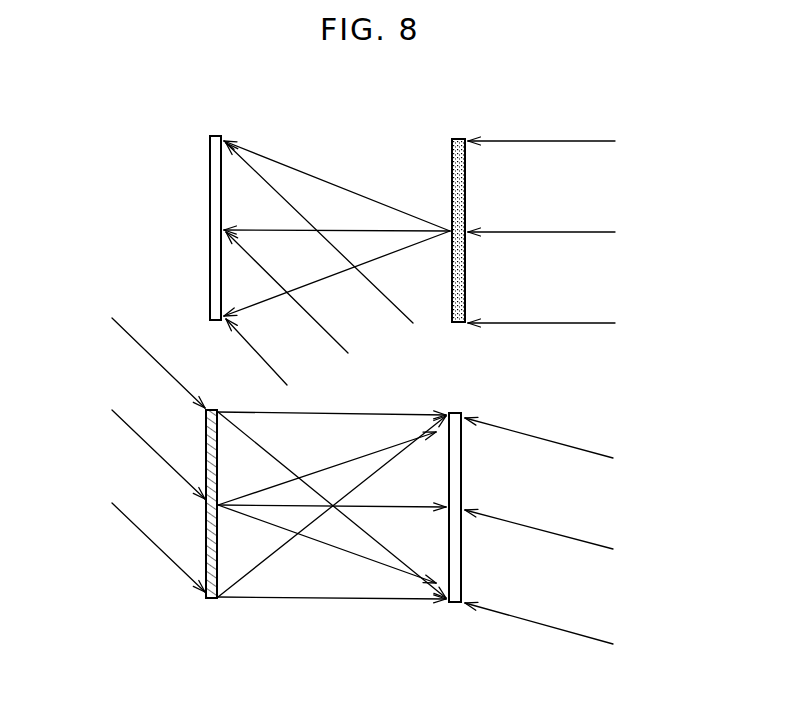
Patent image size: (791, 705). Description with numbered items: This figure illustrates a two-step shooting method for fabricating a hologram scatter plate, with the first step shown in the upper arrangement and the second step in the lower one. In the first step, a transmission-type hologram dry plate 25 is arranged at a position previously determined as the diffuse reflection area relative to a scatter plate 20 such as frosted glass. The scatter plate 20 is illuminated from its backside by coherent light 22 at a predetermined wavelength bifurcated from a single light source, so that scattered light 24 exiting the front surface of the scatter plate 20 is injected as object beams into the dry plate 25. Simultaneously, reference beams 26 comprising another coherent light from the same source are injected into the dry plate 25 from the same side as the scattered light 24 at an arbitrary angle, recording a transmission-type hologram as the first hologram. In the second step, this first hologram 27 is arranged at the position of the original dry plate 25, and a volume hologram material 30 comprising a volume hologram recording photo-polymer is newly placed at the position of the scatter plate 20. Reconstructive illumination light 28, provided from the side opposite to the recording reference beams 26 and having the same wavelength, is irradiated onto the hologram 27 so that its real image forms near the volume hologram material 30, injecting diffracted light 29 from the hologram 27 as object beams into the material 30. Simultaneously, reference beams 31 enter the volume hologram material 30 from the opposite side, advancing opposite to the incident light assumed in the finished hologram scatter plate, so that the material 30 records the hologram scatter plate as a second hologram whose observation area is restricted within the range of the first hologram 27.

The scatter plate 20 is at (460, 138).
The coherent light 22 is at (562, 150).
The scattered light 24 is at (345, 197).
The transmission-type hologram dry plate 25 is at (214, 135).
The reference beams 26 is at (345, 308).
The first hologram 27 is at (212, 600).
The reconstructive illumination light 28 is at (157, 543).
The diffracted light 29 is at (334, 592).
The volume hologram material 30 is at (455, 605).
The reference beams 31 is at (548, 618).